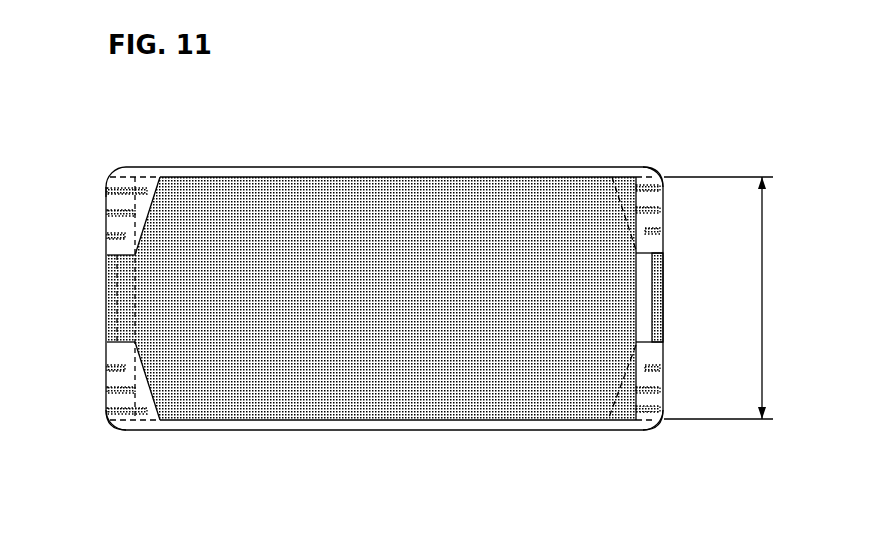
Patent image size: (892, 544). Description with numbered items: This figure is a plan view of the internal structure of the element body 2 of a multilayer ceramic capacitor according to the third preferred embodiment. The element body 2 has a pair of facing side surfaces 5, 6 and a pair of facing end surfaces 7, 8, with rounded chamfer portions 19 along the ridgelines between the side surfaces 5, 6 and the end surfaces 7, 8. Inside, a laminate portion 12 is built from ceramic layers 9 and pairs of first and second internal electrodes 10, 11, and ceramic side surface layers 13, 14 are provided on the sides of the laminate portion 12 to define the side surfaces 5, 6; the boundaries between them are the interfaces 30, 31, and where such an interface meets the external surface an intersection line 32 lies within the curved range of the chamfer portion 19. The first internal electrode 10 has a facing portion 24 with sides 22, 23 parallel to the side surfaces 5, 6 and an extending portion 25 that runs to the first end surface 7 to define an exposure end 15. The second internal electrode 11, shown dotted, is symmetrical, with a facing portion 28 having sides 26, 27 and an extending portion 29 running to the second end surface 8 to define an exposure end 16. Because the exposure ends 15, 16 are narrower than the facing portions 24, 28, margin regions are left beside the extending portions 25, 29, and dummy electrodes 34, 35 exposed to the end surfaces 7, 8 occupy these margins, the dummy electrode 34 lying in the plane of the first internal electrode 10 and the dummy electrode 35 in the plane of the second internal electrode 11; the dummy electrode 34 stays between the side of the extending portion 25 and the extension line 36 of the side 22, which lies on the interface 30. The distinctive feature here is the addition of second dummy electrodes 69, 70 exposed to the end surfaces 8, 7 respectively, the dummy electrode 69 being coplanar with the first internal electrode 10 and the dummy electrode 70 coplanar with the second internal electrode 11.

The element body 2 is at (210, 80).
The side surface 5 is at (438, 167).
The side surface 6 is at (312, 432).
The first end surface 7 is at (107, 361).
The second end surface 8 is at (662, 386).
The ceramic layer 9 is at (113, 397).
The first internal electrode 10 is at (365, 174).
The second internal electrode 11 is at (420, 428).
The laminate portion 12 is at (764, 272).
The ceramic side surface layer 13 is at (551, 173).
The ceramic side surface layer 14 is at (367, 425).
The exposure end 15 is at (105, 314).
The exposure end 16 is at (665, 310).
The rounded chamfer portion 19 is at (652, 166).
The side 22 is at (310, 177).
The side 23 is at (214, 422).
The facing portion 24 is at (263, 394).
The extending portion 25 is at (118, 270).
The side 26 is at (503, 178).
The side 27 is at (500, 421).
The facing portion 28 is at (574, 185).
The extending portion 29 is at (665, 259).
The interface 30 is at (127, 177).
The interface 31 is at (122, 424).
The intersection line 32 is at (106, 177).
The dummy electrode 34 is at (120, 218).
The dummy electrode 35 is at (648, 364).
The extension line 36 is at (146, 177).
The second dummy electrode 69 is at (677, 296).
The second dummy electrode 70 is at (103, 320).